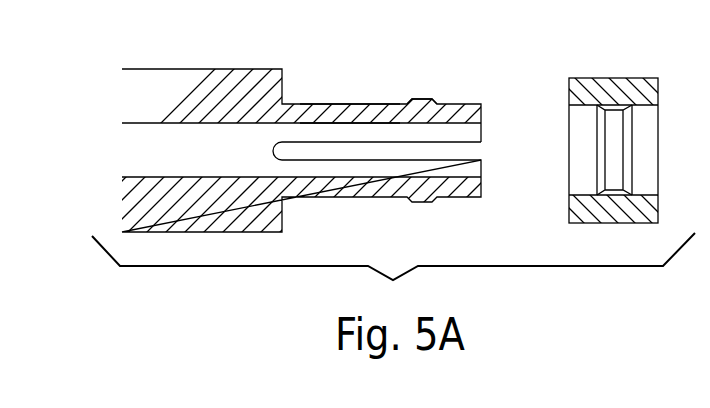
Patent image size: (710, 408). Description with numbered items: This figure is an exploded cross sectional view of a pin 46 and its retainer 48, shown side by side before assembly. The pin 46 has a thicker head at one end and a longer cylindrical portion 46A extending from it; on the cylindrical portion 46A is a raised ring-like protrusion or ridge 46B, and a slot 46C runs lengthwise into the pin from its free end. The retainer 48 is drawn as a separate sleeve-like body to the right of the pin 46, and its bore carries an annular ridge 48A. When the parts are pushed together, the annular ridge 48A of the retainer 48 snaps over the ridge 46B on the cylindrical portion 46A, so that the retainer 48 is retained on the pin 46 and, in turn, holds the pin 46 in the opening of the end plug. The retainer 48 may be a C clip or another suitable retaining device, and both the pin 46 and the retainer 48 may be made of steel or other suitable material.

The pin 46 is at (210, 62).
The cylindrical portion 46A is at (356, 103).
The raised ring-like protrusion or ridge 46B is at (425, 100).
The slot 46C is at (476, 153).
The retainer 48 is at (598, 65).
The annular ridge 48A is at (608, 108).